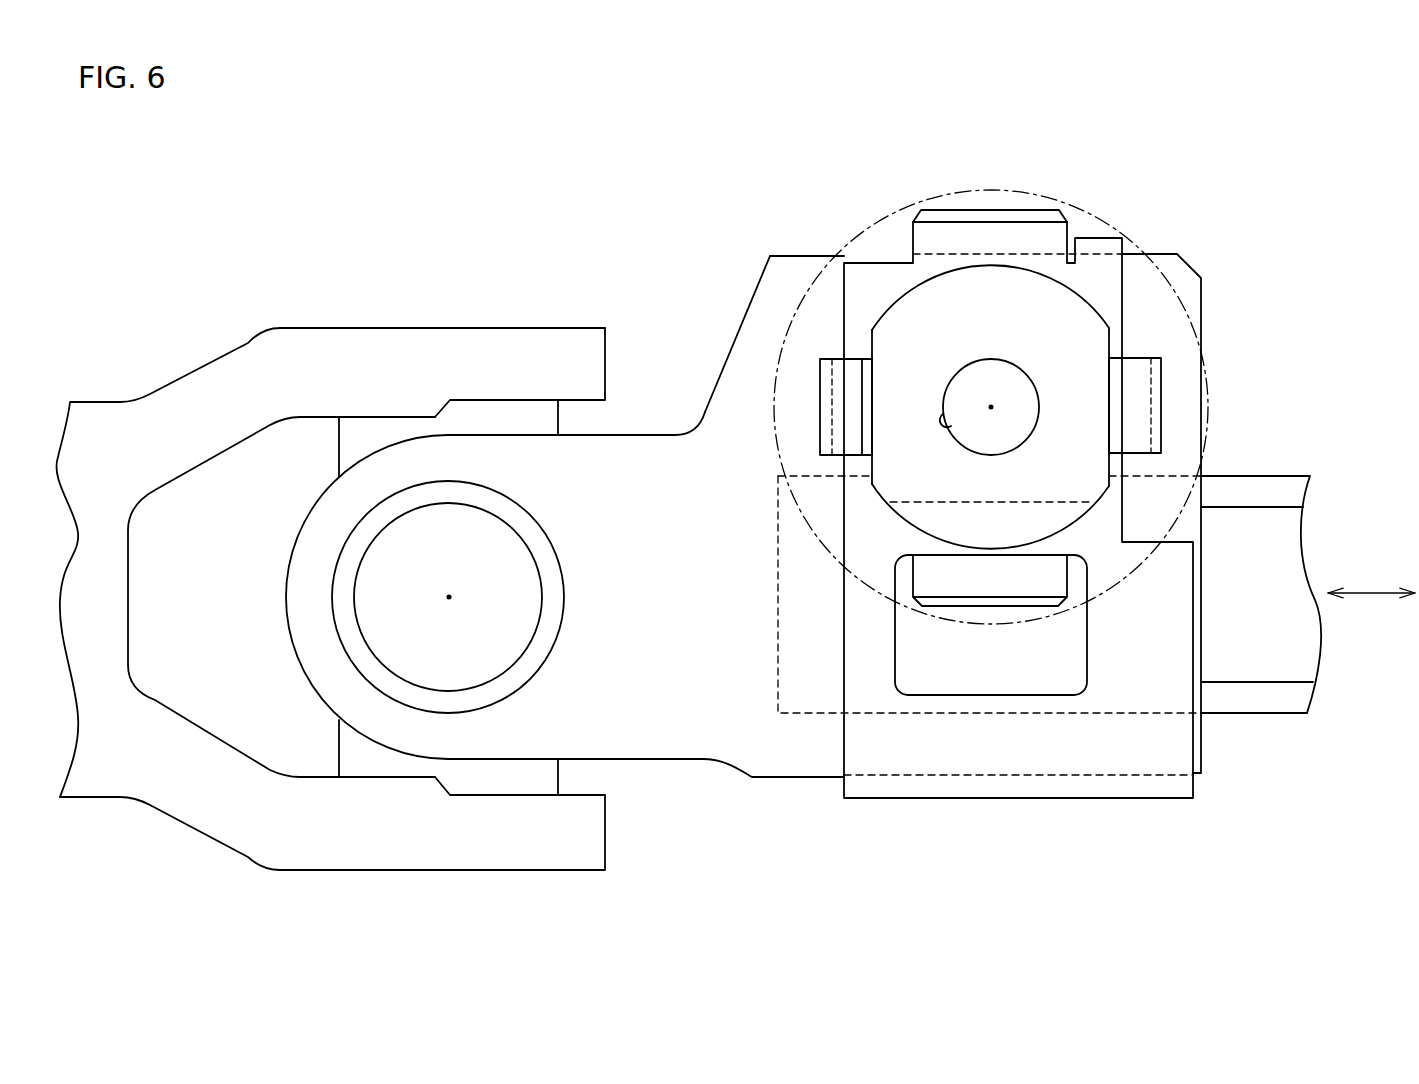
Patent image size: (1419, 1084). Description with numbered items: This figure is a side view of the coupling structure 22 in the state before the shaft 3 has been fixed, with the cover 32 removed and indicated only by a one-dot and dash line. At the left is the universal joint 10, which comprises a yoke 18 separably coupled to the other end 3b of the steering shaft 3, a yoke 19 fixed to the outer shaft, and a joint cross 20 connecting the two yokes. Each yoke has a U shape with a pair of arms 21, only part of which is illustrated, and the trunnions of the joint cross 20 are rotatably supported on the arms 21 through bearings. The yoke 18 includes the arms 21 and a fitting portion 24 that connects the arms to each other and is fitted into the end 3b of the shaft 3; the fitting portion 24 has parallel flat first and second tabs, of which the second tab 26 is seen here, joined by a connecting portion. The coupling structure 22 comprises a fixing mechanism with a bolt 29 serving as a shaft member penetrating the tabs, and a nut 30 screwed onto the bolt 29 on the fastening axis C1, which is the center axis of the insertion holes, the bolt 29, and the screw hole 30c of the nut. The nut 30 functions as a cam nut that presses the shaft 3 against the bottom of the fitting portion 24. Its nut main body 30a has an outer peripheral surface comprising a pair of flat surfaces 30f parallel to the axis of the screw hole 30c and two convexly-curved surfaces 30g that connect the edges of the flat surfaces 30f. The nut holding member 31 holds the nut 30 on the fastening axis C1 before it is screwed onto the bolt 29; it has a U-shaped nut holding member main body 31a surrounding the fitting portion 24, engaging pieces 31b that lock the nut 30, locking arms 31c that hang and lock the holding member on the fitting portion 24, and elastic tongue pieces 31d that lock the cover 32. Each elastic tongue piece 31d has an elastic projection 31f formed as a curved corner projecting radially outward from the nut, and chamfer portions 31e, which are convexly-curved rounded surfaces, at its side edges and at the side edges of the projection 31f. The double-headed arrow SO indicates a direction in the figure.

The steering shaft 3 is at (1283, 473).
The other end of the steering shaft 3b is at (1225, 497).
The universal joint 10 is at (467, 290).
The yoke 18 is at (725, 362).
The yoke 19 is at (212, 358).
The joint cross 20 is at (517, 413).
The arms 21 is at (372, 345).
The coupling structure 22 is at (717, 858).
The fitting portion 24 is at (798, 255).
The second tab 26 is at (1185, 272).
The bolt 29 is at (1002, 390).
The nut 30 is at (1100, 245).
The nut main body 30a is at (995, 290).
The screw hole 30c is at (948, 423).
The flat surfaces 30f is at (1113, 345).
The convexly-curved surfaces 30g is at (893, 295).
The nut holding member 31 is at (990, 798).
The nut holding member main body 31a is at (862, 735).
The engaging pieces 31b is at (843, 418).
The locking arms 31c is at (1089, 297).
The elastic tongue pieces 31d is at (1030, 218).
The chamfer portion 31e is at (913, 210).
The elastic projection 31f is at (1013, 208).
The cover 32 is at (848, 233).
The fastening axis C1 is at (989, 405).
The sliding direction SO is at (1380, 593).